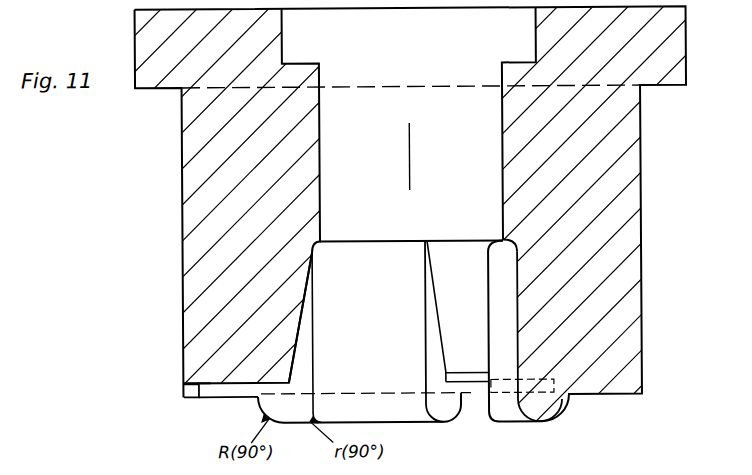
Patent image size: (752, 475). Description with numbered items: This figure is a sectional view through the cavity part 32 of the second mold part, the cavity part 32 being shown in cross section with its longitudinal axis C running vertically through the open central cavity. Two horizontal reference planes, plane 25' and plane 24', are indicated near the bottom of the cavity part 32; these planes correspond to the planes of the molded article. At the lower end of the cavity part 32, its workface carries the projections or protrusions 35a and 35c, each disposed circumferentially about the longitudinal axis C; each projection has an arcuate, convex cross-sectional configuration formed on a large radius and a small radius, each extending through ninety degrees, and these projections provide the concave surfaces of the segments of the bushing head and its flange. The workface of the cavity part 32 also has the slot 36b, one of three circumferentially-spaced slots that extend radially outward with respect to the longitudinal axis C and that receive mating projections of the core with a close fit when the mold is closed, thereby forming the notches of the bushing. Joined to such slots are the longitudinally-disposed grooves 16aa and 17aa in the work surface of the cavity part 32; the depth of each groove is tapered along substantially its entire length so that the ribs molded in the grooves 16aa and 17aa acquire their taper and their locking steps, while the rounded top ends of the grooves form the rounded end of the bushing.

The cavity part 32 is at (151, 233).
The longitudinal axis C is at (412, 158).
The groove 16aa is at (312, 282).
The groove 17aa is at (430, 334).
The plane 25' is at (142, 385).
The plane 24' is at (140, 399).
The slot 36b is at (184, 397).
The projection 35c is at (413, 423).
The projection 35a is at (514, 423).